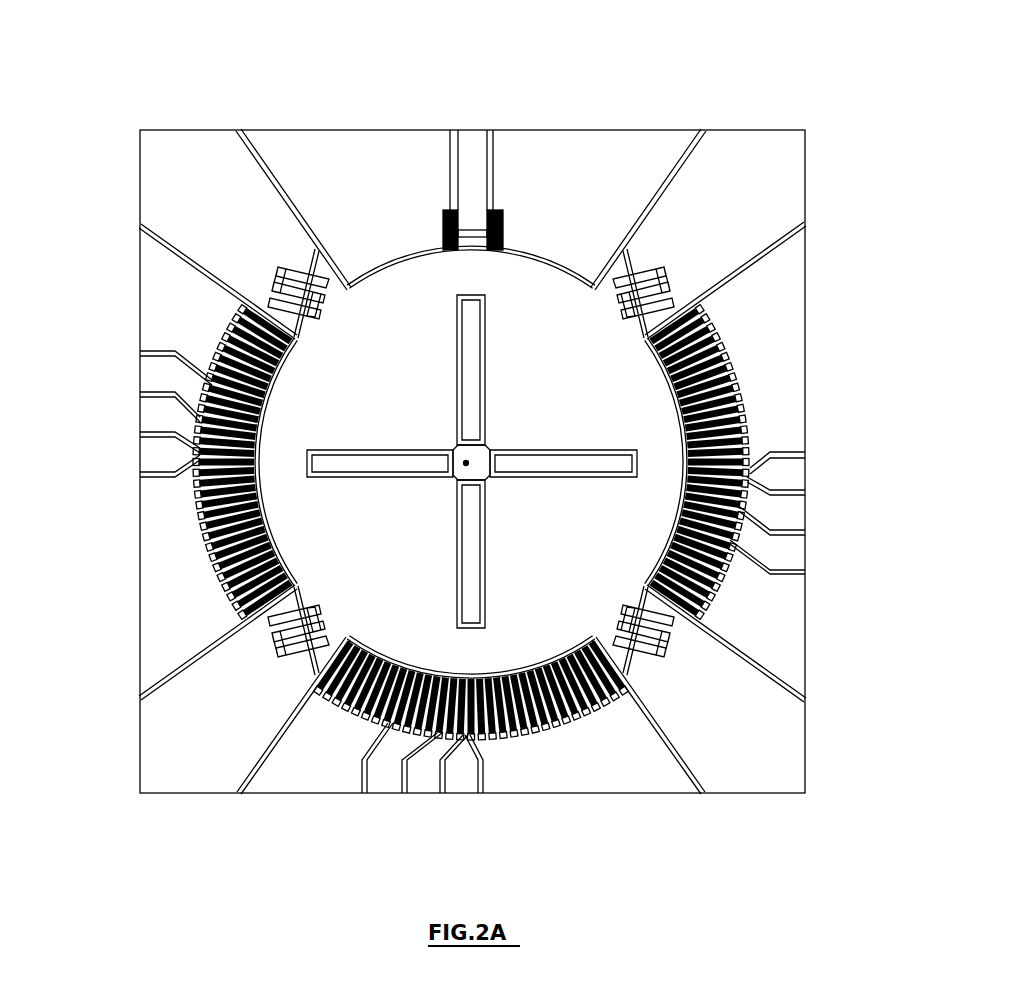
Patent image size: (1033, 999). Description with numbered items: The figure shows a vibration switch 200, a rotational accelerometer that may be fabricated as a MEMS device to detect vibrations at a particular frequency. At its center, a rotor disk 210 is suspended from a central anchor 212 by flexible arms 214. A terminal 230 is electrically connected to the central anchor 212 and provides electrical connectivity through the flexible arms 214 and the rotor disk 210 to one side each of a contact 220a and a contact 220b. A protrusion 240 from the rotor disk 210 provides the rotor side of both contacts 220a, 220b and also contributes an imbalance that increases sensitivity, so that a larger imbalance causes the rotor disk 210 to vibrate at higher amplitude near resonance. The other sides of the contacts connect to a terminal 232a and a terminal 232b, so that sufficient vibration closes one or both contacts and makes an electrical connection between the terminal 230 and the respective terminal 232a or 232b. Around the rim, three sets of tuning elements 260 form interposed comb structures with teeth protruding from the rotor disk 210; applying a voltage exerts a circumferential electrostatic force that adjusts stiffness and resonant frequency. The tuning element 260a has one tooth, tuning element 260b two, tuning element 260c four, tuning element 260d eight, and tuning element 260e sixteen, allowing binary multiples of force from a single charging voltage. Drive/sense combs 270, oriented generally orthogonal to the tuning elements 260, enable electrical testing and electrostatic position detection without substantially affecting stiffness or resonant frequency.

The vibration switch 200 is at (748, 72).
The rotor disk 210 is at (617, 362).
The central anchor 212 is at (485, 470).
The flexible arms 214 is at (388, 450).
The contact 220a is at (447, 215).
The contact 220b is at (480, 228).
The terminal 230 is at (466, 466).
The terminal 232a is at (283, 140).
The terminal 232b is at (662, 140).
The protrusion 240 is at (480, 255).
The tuning elements 260 is at (826, 232).
The tuning element 260a is at (150, 456).
The tuning element 260b is at (150, 412).
The tuning element 260c is at (150, 378).
The tuning element 260d is at (150, 272).
The tuning element 260e is at (150, 574).
The combs 270 is at (275, 283).